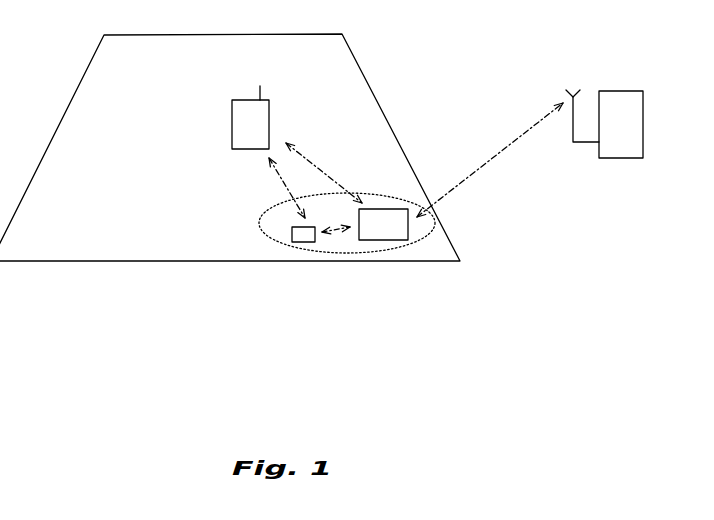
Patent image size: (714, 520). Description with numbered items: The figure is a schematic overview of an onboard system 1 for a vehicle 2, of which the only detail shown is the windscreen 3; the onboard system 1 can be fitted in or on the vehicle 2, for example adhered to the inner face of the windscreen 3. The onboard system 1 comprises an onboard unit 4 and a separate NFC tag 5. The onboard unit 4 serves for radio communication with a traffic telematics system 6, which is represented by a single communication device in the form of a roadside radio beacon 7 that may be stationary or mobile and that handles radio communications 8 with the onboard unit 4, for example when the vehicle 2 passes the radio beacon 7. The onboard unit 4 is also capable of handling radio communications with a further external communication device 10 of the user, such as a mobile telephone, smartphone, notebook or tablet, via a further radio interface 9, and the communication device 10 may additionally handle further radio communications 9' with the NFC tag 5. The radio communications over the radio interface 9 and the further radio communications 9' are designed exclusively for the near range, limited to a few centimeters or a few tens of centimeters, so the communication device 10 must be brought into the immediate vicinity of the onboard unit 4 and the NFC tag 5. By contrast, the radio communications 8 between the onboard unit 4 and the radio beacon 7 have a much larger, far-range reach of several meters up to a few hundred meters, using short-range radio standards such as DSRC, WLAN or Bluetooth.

The onboard system 1 is at (423, 240).
The vehicle 2 is at (50, 288).
The windscreen 3 is at (93, 80).
The onboard unit 4 is at (377, 242).
The NFC tag 5 is at (303, 242).
The traffic telematics system 6 is at (626, 202).
The roadside radio beacon 7 is at (643, 141).
The radio communications 8 is at (493, 157).
The radio interface 9 is at (324, 169).
The radio communications 9' is at (270, 188).
The external communication device 10 is at (233, 133).